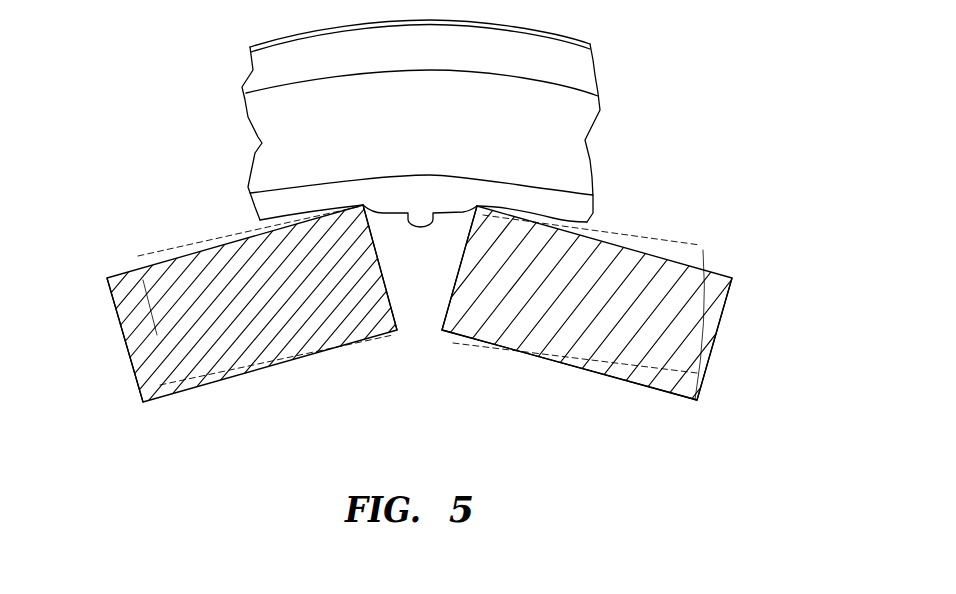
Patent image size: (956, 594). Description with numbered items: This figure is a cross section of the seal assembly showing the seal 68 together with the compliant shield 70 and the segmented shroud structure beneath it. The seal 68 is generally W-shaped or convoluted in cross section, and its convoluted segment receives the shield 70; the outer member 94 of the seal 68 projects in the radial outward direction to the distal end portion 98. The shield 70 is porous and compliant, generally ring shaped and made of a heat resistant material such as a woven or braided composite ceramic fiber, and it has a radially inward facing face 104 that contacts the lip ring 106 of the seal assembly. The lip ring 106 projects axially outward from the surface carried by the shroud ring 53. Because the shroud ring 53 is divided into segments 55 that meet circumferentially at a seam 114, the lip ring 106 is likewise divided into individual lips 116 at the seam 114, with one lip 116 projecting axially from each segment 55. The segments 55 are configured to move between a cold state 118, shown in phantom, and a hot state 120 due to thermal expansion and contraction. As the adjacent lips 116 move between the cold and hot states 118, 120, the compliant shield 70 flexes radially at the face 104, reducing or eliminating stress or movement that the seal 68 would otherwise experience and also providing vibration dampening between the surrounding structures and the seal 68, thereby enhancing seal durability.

The distal end portion 98 is at (582, 70).
The seal 68 is at (459, 123).
The outer member 94 is at (583, 173).
The shield 70 is at (575, 203).
The radially inward facing face 104 is at (430, 212).
The seam 114 is at (442, 289).
The lip 116 is at (255, 312).
The cold state 118 is at (185, 240).
The hot state 120 is at (115, 265).
The shroud ring 53 is at (735, 302).
The lip ring 106 is at (716, 369).
The segment 55 is at (428, 306).